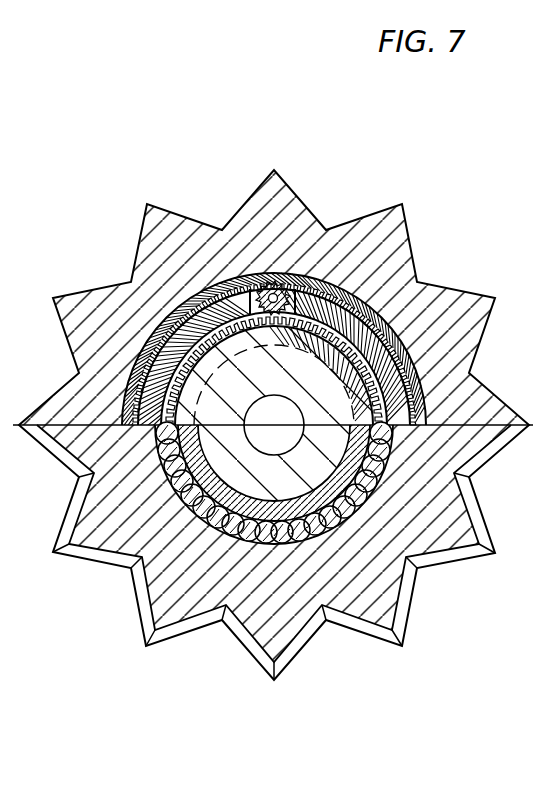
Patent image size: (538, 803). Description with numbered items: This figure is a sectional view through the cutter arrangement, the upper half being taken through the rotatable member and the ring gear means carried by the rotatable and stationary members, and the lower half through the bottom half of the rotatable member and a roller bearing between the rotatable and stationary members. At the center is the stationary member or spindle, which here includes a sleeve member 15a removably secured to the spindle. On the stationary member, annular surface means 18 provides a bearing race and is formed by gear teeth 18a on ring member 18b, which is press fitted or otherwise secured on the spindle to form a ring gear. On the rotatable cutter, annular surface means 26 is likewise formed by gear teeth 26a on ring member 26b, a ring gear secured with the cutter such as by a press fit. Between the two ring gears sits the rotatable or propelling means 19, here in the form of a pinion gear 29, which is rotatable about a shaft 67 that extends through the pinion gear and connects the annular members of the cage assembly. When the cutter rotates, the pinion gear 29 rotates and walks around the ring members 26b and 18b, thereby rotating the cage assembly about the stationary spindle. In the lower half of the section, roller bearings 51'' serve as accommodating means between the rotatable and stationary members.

The annular surface means 18 is at (220, 281).
The gear teeth 18a is at (380, 371).
The ring member 18b is at (408, 366).
The annular surface means 26 is at (250, 287).
The gear teeth 26a is at (335, 297).
The ring member 26b is at (352, 325).
The pinion gear 29 is at (272, 282).
The rotatable or propelling means 19 is at (284, 292).
The shaft 67 is at (273, 303).
The sleeve member 15a is at (142, 586).
The roller bearings 51'' is at (274, 560).